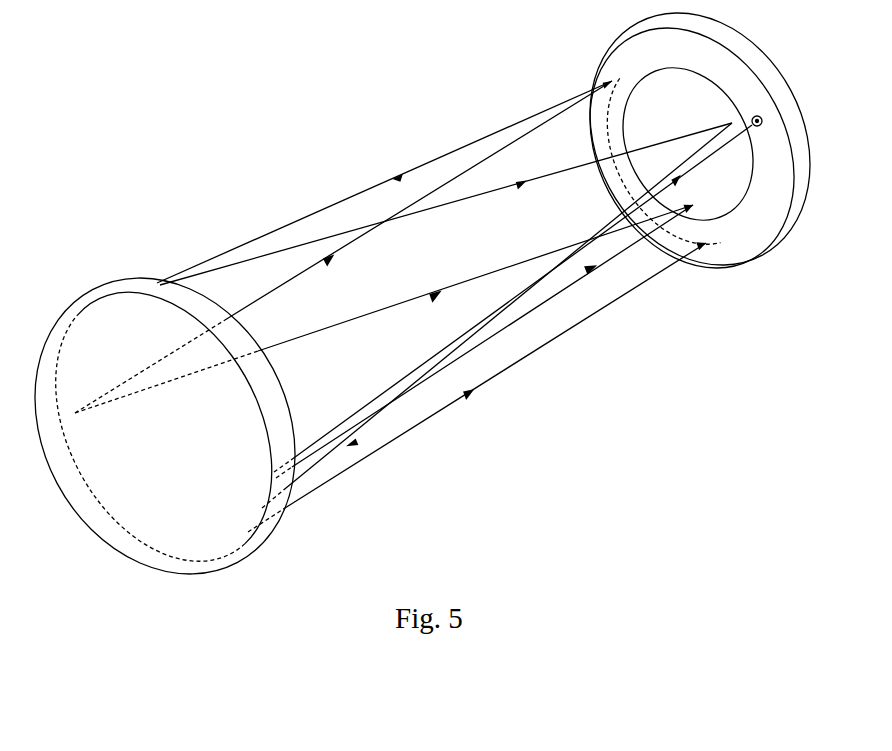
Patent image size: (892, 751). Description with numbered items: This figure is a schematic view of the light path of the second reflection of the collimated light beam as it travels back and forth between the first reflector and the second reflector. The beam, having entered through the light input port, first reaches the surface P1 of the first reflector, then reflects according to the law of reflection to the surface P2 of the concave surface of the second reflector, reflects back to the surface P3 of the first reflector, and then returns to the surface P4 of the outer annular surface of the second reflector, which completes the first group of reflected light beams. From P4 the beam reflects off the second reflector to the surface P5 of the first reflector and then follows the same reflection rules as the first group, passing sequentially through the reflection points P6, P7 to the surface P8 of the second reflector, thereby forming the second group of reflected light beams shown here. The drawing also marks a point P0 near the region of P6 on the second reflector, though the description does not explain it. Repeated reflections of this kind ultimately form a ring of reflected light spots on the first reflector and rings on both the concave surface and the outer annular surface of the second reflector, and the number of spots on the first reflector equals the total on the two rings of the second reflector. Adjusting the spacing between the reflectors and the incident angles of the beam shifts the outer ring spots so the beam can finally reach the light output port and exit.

The light entry point P0 is at (523, 294).
The surface P1 of the first reflector P1 is at (274, 470).
The surface P2 of the concave surface of the second reflector P2 is at (396, 306).
The surface P3 of the first reflector P3 is at (342, 260).
The surface P4 of the outer annular surface of the second reflector P4 is at (397, 175).
The surface P5 of the first reflector P5 is at (140, 291).
The reflection point P6 is at (497, 306).
The reflection point P7 is at (465, 394).
The surface P8 of the second reflector P8 is at (711, 243).